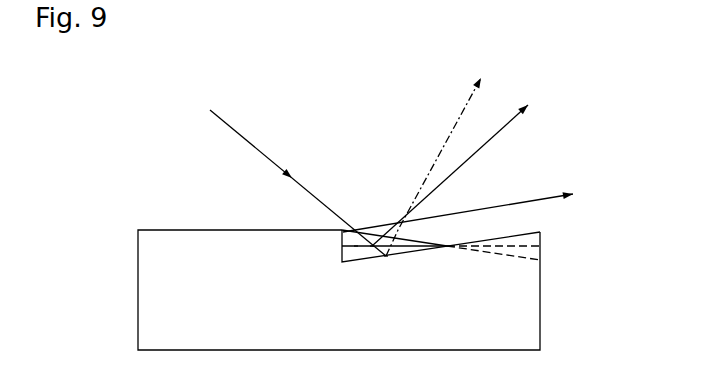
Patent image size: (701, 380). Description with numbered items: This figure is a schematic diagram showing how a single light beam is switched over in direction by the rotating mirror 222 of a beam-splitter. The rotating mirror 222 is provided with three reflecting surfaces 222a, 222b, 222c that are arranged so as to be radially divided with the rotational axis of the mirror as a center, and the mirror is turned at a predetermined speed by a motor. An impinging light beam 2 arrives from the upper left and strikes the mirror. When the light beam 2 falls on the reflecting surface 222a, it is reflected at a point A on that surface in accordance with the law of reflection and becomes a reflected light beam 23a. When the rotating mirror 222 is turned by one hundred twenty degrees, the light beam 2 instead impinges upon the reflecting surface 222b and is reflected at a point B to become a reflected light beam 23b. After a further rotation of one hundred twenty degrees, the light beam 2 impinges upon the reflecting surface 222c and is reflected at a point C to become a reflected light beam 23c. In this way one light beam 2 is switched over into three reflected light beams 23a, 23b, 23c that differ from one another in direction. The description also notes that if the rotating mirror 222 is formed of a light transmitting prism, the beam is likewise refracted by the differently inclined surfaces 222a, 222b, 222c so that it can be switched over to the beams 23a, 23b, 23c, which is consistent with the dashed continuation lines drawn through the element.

The impinging light beam 2 is at (254, 144).
The reflected light beam 23a is at (477, 207).
The reflected light beam 23b is at (461, 165).
The reflected light beam 23c is at (446, 151).
The rotating mirror 222 is at (541, 319).
The reflecting surface 222a is at (342, 239).
The reflecting surface 222b is at (342, 252).
The reflecting surface 222c is at (342, 264).
The reflection point A is at (357, 248).
The reflection point B is at (374, 250).
The reflection point C is at (387, 259).